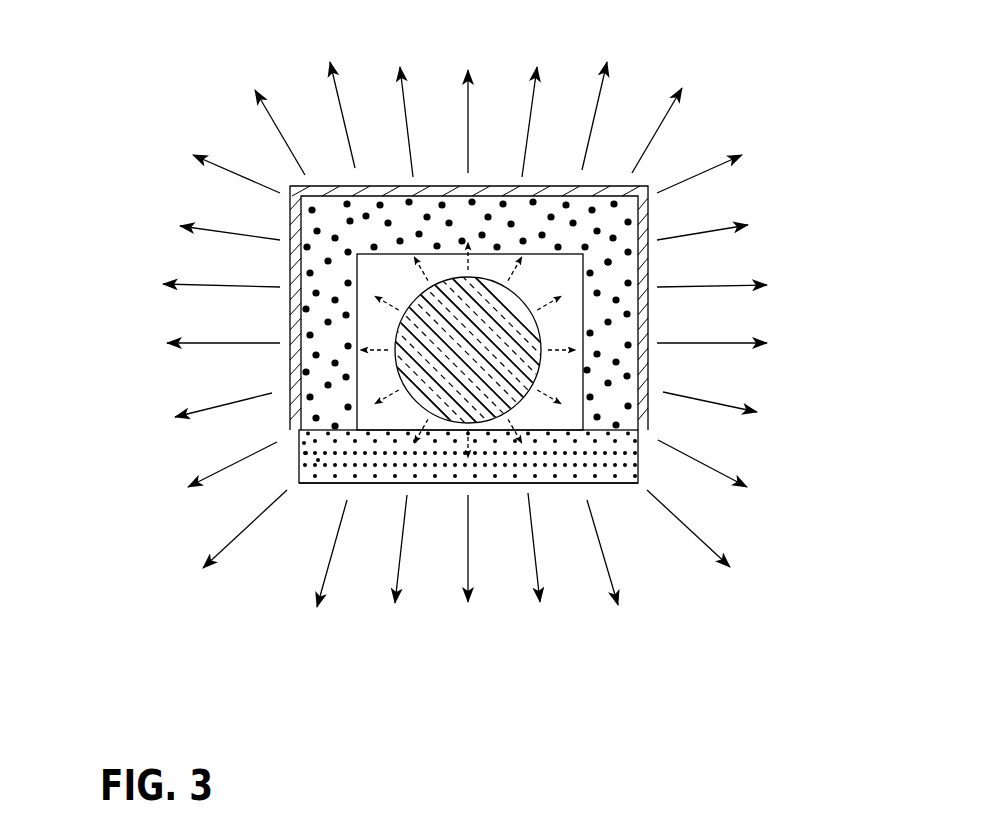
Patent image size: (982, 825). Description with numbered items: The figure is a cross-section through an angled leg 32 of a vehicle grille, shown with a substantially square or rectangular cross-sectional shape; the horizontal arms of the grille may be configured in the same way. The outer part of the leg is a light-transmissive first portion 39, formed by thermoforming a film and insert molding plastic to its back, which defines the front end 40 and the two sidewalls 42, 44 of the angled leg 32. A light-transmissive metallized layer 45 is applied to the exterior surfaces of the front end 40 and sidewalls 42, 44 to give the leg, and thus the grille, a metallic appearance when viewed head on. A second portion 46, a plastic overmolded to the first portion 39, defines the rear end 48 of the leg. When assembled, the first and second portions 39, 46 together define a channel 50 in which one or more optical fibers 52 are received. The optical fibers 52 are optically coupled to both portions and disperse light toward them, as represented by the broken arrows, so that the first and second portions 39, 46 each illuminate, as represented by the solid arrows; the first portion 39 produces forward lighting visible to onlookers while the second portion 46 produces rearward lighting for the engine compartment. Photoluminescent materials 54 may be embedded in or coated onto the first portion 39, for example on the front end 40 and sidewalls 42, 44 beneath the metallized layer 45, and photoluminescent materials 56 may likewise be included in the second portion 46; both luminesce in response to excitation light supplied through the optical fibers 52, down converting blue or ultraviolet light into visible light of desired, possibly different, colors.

The angled leg 32 is at (448, 335).
The light-transmissive first portion 39 is at (607, 173).
The front end 40 is at (480, 220).
The sidewall 42 is at (318, 318).
The sidewall 44 is at (612, 277).
The light-transmissive metallized layer 45 is at (389, 185).
The second portion 46 is at (440, 488).
The rear end 48 is at (372, 470).
The channel 50 is at (376, 365).
The optical fibers 52 is at (512, 365).
The photoluminescent materials 54 is at (607, 380).
The photoluminescent materials 56 is at (317, 460).